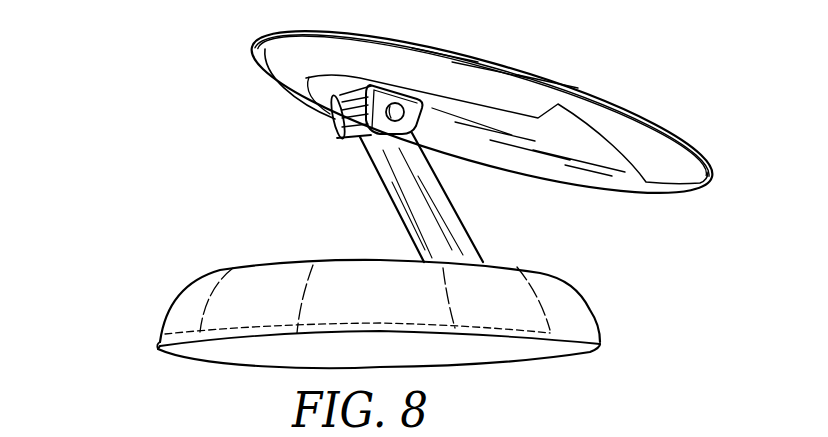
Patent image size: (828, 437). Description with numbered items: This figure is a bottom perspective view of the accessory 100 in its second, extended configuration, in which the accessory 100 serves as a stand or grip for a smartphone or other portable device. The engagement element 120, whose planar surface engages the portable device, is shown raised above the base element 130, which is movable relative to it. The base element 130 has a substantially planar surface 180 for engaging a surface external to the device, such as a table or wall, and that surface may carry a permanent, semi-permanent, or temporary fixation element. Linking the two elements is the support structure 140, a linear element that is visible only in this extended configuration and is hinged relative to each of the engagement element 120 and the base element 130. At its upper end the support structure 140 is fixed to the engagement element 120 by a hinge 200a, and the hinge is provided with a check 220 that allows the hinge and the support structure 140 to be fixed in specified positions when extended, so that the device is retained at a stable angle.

The accessory 100 is at (657, 98).
The engagement element 120 is at (253, 46).
The base element 130 is at (163, 325).
The support structure 140 is at (393, 216).
The planar surface 180 is at (225, 354).
The hinge 200a is at (341, 118).
The check 220 is at (338, 142).